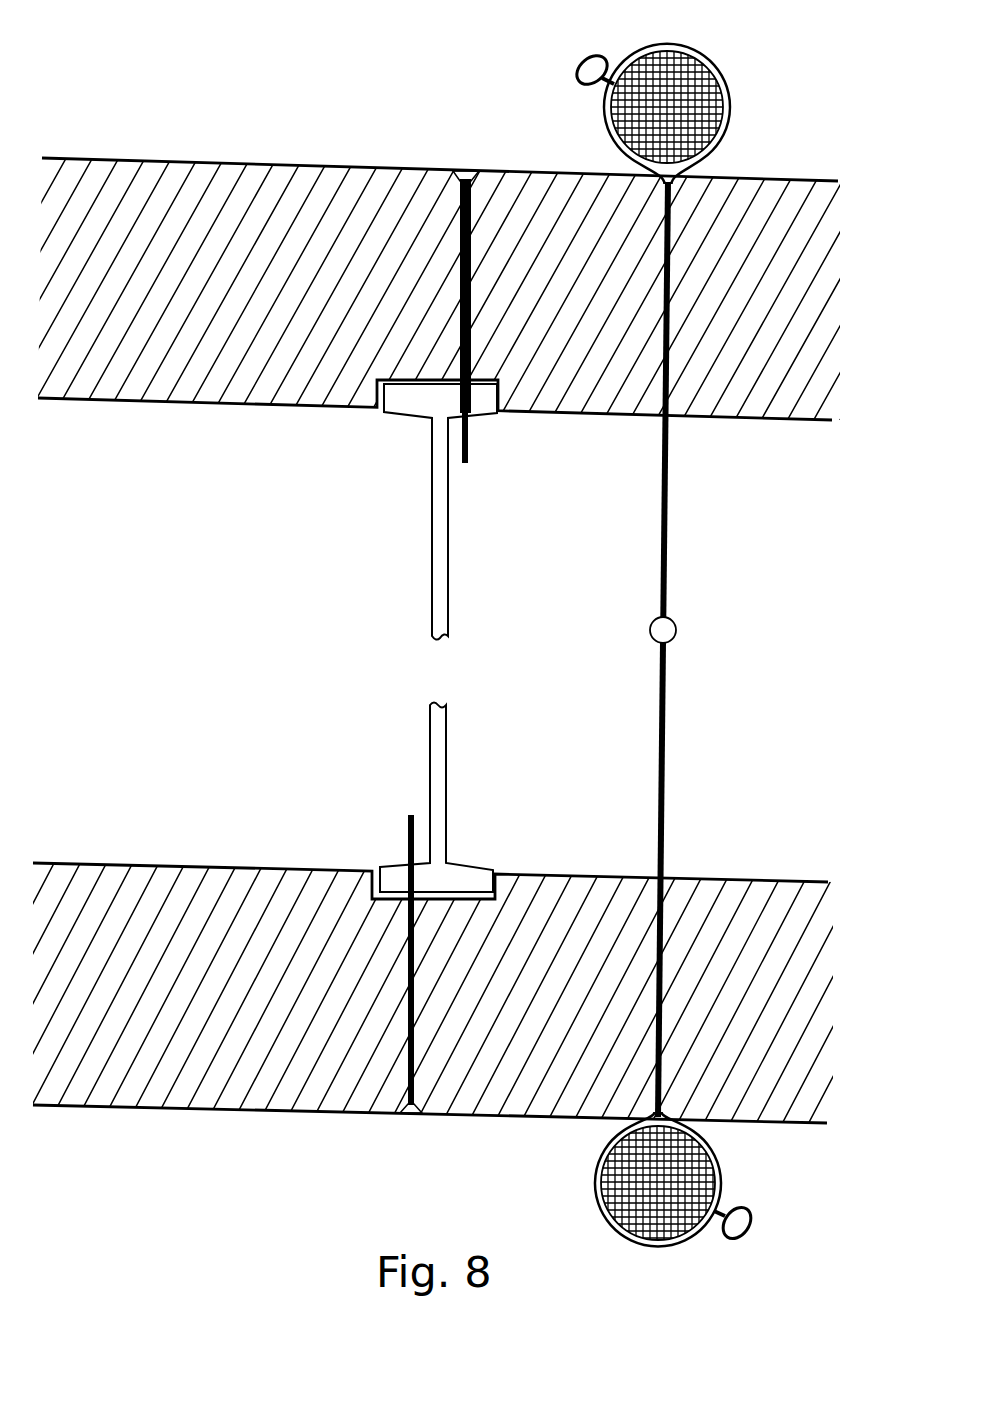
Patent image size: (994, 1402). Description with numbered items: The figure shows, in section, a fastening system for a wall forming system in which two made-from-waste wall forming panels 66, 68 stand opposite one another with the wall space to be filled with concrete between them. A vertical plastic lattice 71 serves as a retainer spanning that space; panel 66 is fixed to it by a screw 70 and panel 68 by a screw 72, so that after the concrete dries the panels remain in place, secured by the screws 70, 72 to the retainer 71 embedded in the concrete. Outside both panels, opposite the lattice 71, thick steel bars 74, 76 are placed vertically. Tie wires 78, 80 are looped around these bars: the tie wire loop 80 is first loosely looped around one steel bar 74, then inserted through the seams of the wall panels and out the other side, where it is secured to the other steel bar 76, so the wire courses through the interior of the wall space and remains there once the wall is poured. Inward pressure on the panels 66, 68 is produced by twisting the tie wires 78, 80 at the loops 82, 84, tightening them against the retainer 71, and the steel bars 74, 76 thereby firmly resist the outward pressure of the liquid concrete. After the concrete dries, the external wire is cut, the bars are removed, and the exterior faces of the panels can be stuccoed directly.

The wall forming panel 66 is at (210, 163).
The wall forming panel 68 is at (117, 863).
The screw 70 is at (465, 168).
The vertical plastic lattice (retainer) 71 is at (449, 592).
The screw 72 is at (408, 840).
The steel bar 74 is at (730, 88).
The steel bar 76 is at (715, 1150).
The tie wire 78 is at (668, 675).
The tie wire loop 80 is at (668, 513).
The loop 82 is at (590, 56).
The loop 84 is at (728, 1238).